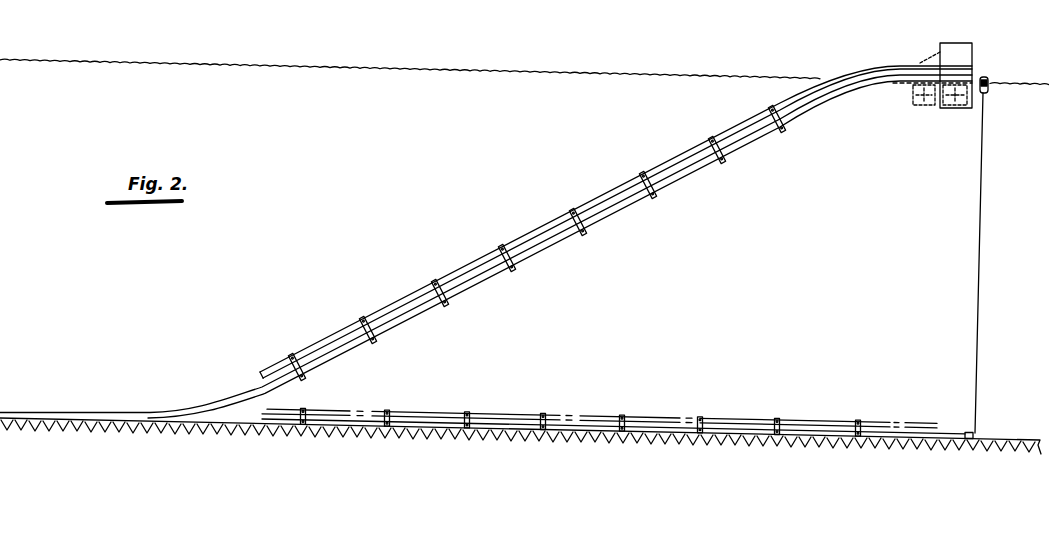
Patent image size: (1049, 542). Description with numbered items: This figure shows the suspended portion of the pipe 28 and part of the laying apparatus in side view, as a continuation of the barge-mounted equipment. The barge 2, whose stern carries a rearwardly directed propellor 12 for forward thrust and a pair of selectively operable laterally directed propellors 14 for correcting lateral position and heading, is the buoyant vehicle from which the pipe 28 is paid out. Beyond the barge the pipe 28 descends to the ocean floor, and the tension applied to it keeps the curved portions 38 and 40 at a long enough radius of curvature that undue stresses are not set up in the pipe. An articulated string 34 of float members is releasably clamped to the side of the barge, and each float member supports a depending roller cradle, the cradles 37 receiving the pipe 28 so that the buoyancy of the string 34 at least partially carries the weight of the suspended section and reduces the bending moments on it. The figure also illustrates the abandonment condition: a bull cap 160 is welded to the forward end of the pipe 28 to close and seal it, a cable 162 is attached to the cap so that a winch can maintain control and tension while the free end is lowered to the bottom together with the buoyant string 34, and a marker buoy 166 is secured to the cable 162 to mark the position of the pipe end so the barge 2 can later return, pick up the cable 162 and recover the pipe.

The barge 2 is at (937, 38).
The rearwardly directed propellor 12 is at (948, 108).
The laterally directed propellors 14 is at (927, 104).
The pipe 28 is at (486, 242).
The articulated string of float members 34 is at (486, 250).
The roller cradles 37 is at (783, 130).
The curved portion 38 is at (222, 402).
The curved portion 40 is at (895, 84).
The bull cap 160 is at (969, 431).
The cable 162 is at (978, 279).
The marker buoy 166 is at (985, 76).